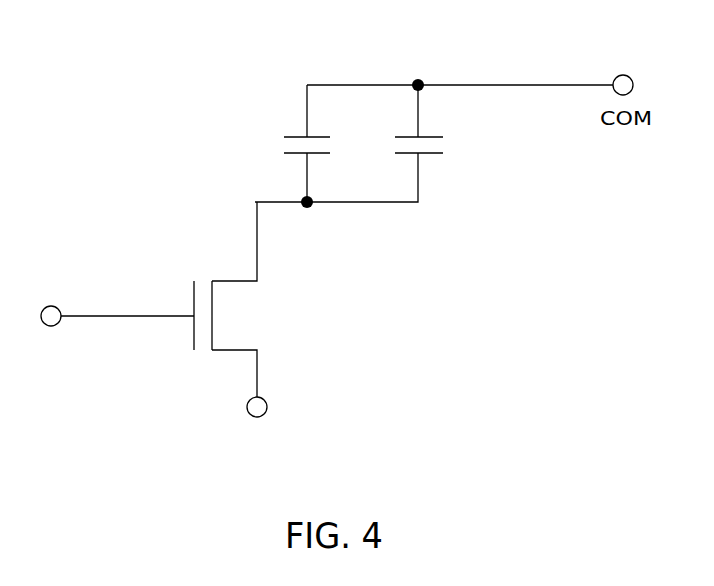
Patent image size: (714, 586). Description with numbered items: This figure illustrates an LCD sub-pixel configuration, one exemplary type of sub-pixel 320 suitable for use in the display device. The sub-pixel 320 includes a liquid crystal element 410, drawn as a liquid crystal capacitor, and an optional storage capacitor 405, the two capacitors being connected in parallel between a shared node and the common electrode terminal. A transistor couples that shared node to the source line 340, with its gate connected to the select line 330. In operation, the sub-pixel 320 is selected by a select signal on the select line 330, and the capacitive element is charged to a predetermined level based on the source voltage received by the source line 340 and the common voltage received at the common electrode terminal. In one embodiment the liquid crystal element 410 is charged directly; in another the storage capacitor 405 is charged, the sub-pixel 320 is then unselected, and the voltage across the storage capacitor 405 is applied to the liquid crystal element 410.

The sub-pixel 320 is at (250, 107).
The storage capacitor 405 is at (258, 146).
The liquid crystal element 410 is at (468, 145).
The select line 330 is at (143, 283).
The source line 340 is at (245, 402).